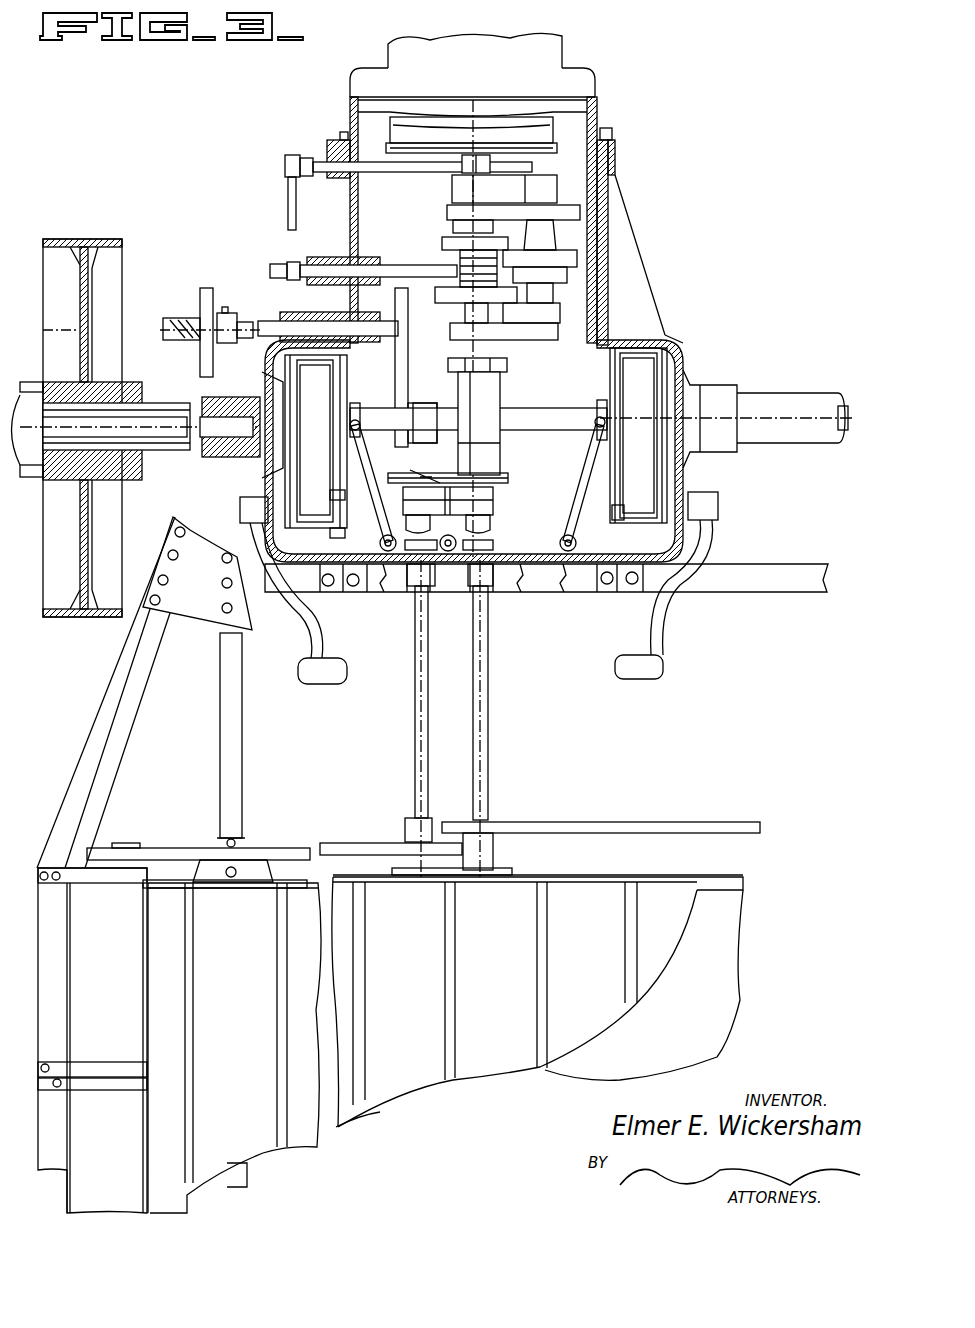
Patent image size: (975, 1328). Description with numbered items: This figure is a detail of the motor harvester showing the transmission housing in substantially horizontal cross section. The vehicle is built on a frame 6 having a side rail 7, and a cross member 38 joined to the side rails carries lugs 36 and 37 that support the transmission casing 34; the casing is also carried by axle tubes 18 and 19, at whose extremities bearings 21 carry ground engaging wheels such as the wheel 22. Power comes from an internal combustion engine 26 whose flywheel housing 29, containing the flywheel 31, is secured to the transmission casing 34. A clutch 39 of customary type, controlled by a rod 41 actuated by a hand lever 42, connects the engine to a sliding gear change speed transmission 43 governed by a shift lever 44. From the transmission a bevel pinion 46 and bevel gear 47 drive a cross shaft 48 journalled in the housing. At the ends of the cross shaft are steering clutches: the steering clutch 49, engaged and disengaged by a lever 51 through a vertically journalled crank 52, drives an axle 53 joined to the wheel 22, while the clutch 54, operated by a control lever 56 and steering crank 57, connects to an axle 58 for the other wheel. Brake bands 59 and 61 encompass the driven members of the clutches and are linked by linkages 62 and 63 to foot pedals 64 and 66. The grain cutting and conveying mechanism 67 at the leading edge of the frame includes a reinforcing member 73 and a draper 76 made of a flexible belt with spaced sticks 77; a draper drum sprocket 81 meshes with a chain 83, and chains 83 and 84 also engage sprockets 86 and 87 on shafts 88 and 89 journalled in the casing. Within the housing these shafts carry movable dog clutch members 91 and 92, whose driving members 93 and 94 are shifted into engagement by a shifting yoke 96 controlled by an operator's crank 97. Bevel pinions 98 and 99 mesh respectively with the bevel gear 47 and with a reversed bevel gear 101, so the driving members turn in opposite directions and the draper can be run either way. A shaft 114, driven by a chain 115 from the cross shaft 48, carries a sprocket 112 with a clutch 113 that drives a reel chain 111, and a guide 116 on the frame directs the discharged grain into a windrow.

The frame 6 is at (120, 724).
The side rail 7 is at (88, 758).
The axle tube 18 is at (165, 392).
The axle tube 19 is at (762, 396).
The bearing 21 is at (112, 385).
The wheel 22 is at (122, 262).
The internal combustion engine 26 is at (545, 48).
The flywheel housing 29 is at (590, 82).
The flywheel 31 is at (355, 106).
The transmission casing 34 is at (640, 295).
The lug 36 is at (352, 590).
The lug 37 is at (610, 590).
The cross member 38 is at (745, 585).
The clutch 39 is at (545, 125).
The rod 41 is at (330, 155).
The hand lever 42 is at (290, 205).
The change speed transmission 43 is at (580, 260).
The shift lever 44 is at (285, 262).
The bevel pinion 46 is at (507, 368).
The bevel gear 47 is at (500, 452).
The cross shaft 48 is at (540, 410).
The steering clutch 49 is at (347, 372).
The lever 51 is at (372, 450).
The crank 52 is at (410, 583).
The axle 53 is at (158, 440).
The clutch 54 is at (612, 363).
The control lever 56 is at (588, 465).
The steering crank 57 is at (567, 552).
The axle 58 is at (858, 390).
The brake band 59 is at (316, 388).
The brake band 61 is at (630, 380).
The linkage 62 is at (345, 494).
The linkage 63 is at (612, 518).
The foot pedal 64 is at (347, 672).
The foot pedal 66 is at (663, 665).
The grain cutting and conveying mechanism 67 is at (414, 1125).
The reinforcing member 73 is at (242, 755).
The draper 76 is at (414, 966).
The sticks 77 is at (277, 958).
The sprocket 81 is at (97, 858).
The chain 83 is at (280, 858).
The chain 84 is at (690, 826).
The sprocket 86 is at (395, 847).
The sprocket 87 is at (490, 825).
The shaft 88 is at (414, 728).
The shaft 89 is at (489, 730).
The movable member of dog clutch 91 is at (382, 541).
The movable member of dog clutch 92 is at (493, 538).
The driving member of dog clutch 93 is at (405, 520).
The driving member of dog clutch 94 is at (490, 520).
The shifting yoke 96 is at (447, 552).
The operator's crank 97 is at (478, 583).
The bevel pinion 98 is at (505, 472).
The bevel pinion 99 is at (398, 470).
The bevel gear 101 is at (440, 376).
The chain 111 is at (210, 370).
The sprocket 112 is at (206, 285).
The clutch 113 is at (228, 312).
The shaft 114 is at (258, 320).
The chain 115 is at (406, 360).
The guide 116 is at (110, 1042).